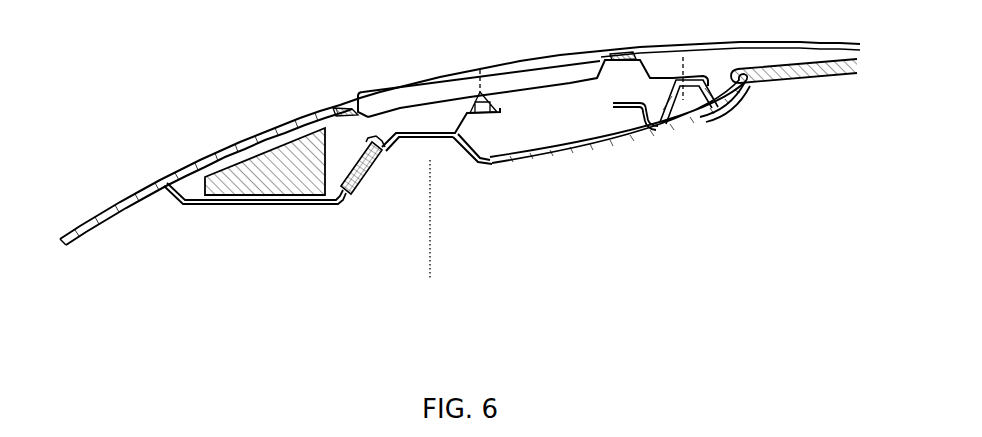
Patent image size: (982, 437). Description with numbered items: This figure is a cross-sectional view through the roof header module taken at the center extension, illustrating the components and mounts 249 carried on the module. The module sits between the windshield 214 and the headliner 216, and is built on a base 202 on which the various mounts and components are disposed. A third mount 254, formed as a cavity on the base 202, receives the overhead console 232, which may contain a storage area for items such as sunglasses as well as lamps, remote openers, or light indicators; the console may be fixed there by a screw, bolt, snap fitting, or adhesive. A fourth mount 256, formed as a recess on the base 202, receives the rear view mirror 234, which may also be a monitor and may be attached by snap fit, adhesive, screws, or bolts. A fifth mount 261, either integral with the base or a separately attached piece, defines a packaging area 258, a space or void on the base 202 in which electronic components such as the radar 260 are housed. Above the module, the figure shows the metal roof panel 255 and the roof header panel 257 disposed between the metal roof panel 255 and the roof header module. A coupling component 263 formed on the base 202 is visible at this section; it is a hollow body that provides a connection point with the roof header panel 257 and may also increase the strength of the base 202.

The windshield 214 is at (150, 186).
The headliner 216 is at (818, 70).
The roof header panel 257 is at (557, 82).
The metal roof panel 255 is at (503, 62).
The overhead console 232 is at (503, 162).
The coupling component 263 is at (745, 97).
The base 202 is at (700, 120).
The third mount 254 is at (627, 108).
The radar 260 is at (550, 165).
The packaging area 258 is at (273, 182).
The fifth mount 261 is at (211, 206).
The rear view mirror 234 is at (370, 163).
The fourth mount 256 is at (386, 145).
The mounts 249 is at (205, 257).